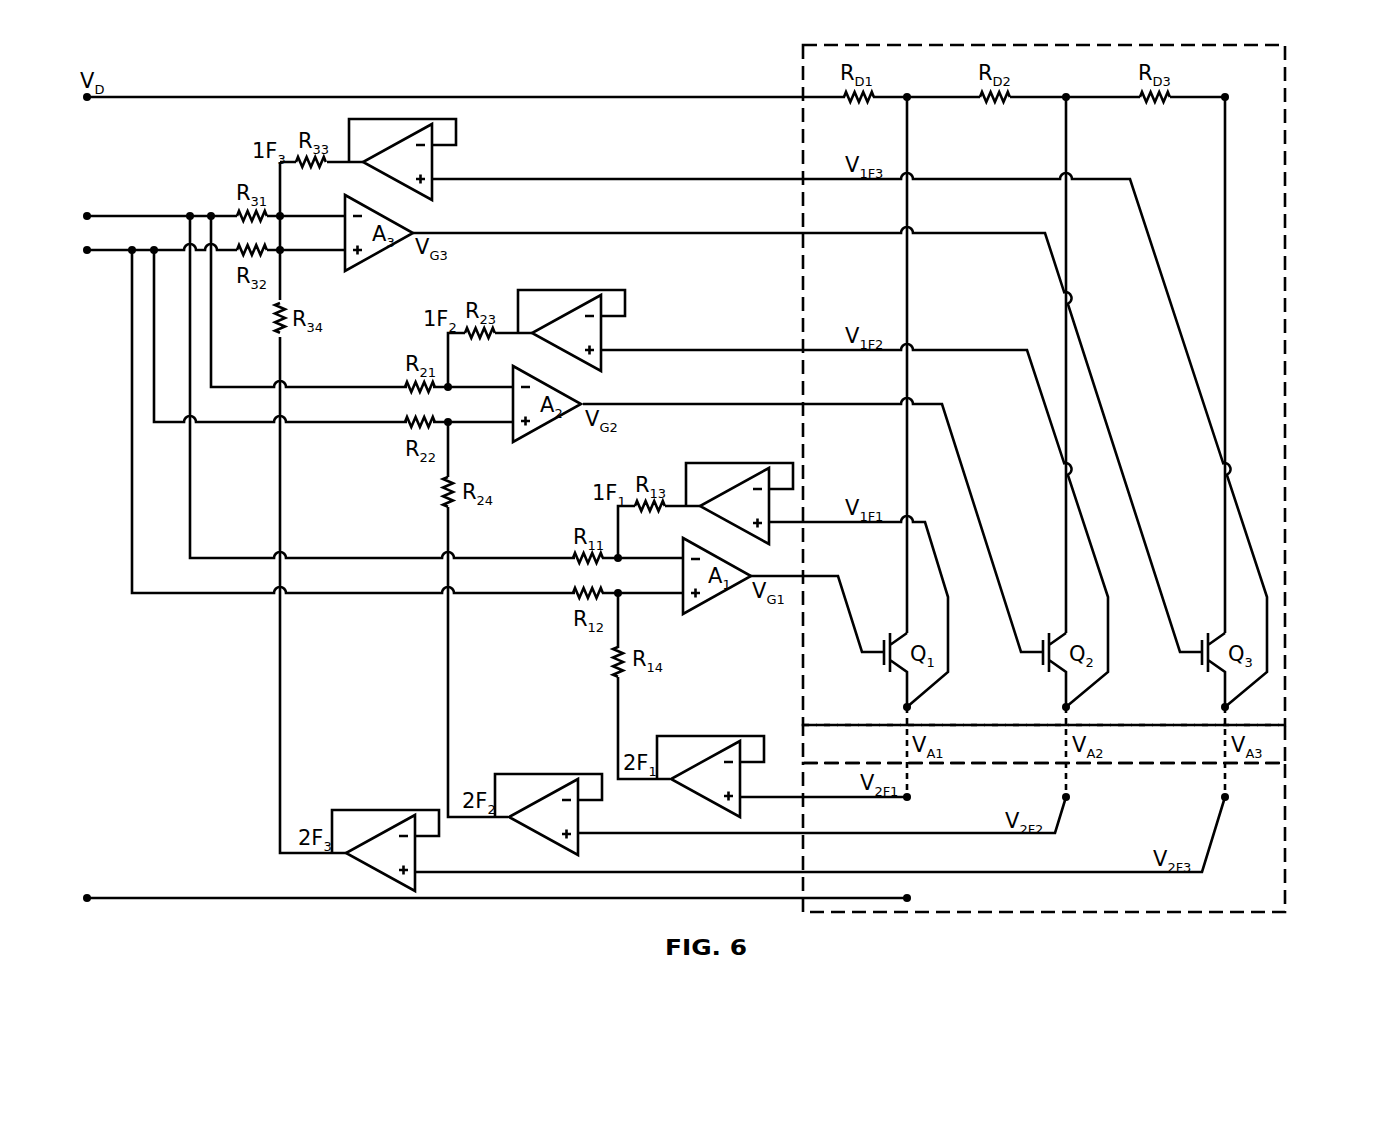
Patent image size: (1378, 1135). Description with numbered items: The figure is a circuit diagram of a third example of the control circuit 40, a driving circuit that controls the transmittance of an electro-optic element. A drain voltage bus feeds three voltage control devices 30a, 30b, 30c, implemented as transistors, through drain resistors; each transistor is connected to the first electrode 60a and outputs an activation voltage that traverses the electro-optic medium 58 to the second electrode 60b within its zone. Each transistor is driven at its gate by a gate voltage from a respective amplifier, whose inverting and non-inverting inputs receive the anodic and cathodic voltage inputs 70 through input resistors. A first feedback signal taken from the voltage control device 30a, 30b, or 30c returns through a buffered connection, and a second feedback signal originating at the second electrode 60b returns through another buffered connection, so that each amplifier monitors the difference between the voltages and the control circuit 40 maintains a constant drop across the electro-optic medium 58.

The inputs 70 is at (128, 192).
The control circuit 40 is at (298, 912).
The first voltage control device 30a is at (888, 683).
The second voltage control device 30b is at (1047, 683).
The third voltage control device 30c is at (1206, 683).
The electro-optic medium 58 is at (1297, 728).
The first electrode 60a is at (1297, 45).
The second electrode 60b is at (1297, 763).